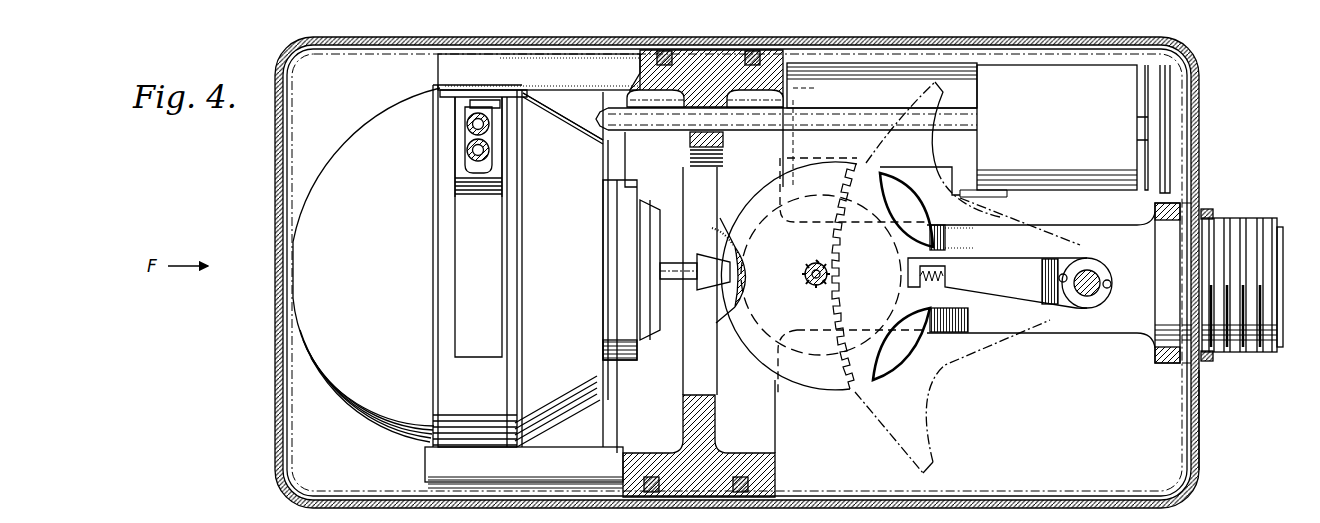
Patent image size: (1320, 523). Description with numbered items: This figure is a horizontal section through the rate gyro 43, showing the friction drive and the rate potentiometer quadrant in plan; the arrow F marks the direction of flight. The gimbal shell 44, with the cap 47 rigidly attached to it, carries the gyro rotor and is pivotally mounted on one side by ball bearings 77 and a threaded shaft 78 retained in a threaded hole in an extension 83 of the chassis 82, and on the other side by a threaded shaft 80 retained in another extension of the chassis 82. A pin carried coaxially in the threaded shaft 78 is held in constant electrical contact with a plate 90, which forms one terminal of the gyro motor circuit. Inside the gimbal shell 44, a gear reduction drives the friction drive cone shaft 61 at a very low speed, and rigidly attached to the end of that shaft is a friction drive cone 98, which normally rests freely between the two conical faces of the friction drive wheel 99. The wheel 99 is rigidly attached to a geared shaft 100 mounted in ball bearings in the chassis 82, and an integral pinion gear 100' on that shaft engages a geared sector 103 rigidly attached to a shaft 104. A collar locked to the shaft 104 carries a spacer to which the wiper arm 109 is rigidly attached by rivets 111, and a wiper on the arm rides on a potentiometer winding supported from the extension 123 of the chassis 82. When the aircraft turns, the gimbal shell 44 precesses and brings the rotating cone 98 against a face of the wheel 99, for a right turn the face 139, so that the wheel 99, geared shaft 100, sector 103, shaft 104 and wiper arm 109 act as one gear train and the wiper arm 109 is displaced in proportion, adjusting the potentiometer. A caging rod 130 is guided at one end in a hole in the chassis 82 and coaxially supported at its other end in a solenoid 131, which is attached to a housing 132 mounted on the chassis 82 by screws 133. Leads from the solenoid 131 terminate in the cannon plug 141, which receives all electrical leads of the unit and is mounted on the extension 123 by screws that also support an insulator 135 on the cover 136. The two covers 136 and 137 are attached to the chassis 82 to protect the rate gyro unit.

The rate gyro 43 is at (297, 380).
The gimbal shell 44 is at (547, 110).
The cap 47 is at (300, 331).
The friction drive cone shaft 61 is at (672, 266).
The ball bearings 77 is at (467, 98).
The threaded shaft 78 is at (483, 90).
The threaded shaft 80 is at (480, 448).
The chassis 82 is at (712, 46).
The extension 83 is at (463, 62).
The plate 90 is at (482, 109).
The friction drive cone 98 is at (716, 279).
The friction drive wheel 99 is at (824, 380).
The geared shaft 100 is at (799, 264).
The pinion gear 100' is at (794, 295).
The geared sector 103 is at (993, 302).
The shaft 104 is at (1097, 272).
The wiper arm 109 is at (997, 283).
The rivets 111 is at (1066, 273).
The extension 123 is at (1152, 360).
The caging rod 130 is at (866, 118).
The solenoid 131 is at (1065, 131).
The housing 132 is at (963, 58).
The screws 133 is at (812, 84).
The insulator 135 is at (1191, 270).
The cover 136 is at (1198, 446).
The cover 137 is at (277, 441).
The face 139 is at (718, 236).
The cannon plug 141 is at (1230, 220).